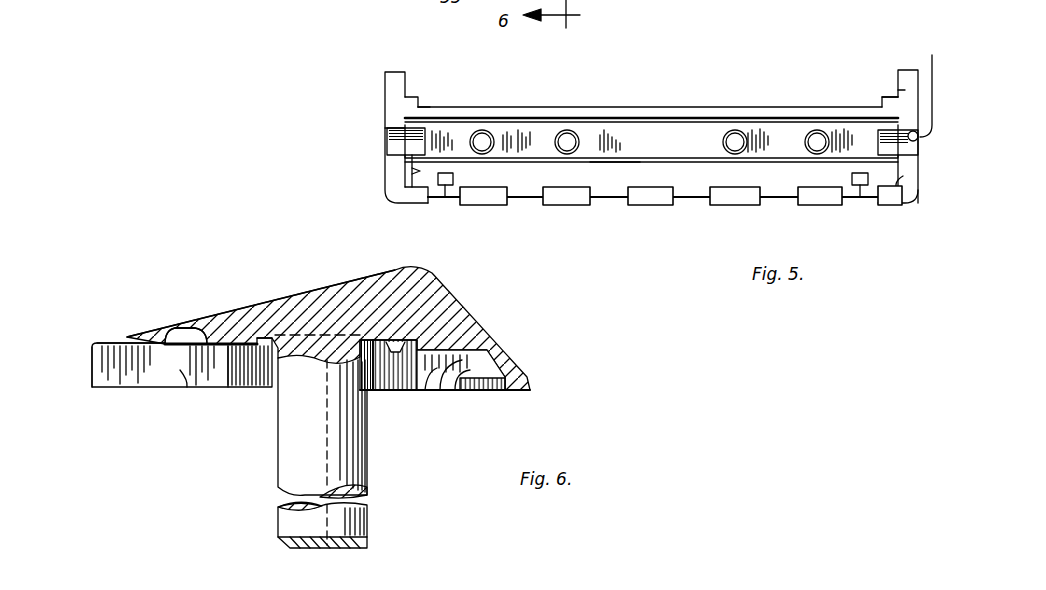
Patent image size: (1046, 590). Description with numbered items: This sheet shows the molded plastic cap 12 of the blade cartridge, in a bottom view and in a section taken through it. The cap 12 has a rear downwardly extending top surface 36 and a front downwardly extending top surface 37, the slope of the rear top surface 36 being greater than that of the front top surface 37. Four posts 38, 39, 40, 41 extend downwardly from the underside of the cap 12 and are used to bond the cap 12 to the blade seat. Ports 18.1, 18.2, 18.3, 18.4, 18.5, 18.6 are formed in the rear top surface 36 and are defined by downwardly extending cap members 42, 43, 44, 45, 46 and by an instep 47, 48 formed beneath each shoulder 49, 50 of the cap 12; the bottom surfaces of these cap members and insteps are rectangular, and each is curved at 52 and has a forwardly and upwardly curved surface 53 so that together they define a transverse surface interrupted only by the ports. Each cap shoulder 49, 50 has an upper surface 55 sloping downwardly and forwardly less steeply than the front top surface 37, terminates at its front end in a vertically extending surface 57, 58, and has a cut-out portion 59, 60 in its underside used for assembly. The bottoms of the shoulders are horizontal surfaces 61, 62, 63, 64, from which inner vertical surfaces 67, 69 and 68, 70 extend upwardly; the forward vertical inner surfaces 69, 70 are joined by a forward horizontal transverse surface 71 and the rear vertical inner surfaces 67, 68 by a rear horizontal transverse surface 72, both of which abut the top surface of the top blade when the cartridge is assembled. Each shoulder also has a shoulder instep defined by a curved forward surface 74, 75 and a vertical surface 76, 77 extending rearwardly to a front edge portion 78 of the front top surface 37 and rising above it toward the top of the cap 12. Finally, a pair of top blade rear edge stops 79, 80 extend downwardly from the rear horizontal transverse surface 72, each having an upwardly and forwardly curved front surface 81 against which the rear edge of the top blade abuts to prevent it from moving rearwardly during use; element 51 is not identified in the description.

In FIG. 5, the cap 12 is at (755, 97).
In FIG. 6, the cap 12 is at (279, 287).
In FIG. 5, the port 18.1 is at (452, 205).
In FIG. 5, the port 18.2 is at (527, 201).
In FIG. 5, the port 18.3 is at (612, 201).
In FIG. 5, the port 18.4 is at (696, 201).
In FIG. 5, the port 18.5 is at (777, 202).
In FIG. 5, the port 18.6 is at (871, 202).
In FIG. 6, the rear top surface 36 is at (467, 318).
In FIG. 6, the front top surface 37 is at (254, 313).
In FIG. 5, the post 38 is at (483, 138).
In FIG. 5, the post 39 is at (568, 135).
In FIG. 6, the post 39 is at (283, 455).
In FIG. 5, the post 40 is at (734, 133).
In FIG. 5, the post 41 is at (818, 133).
In FIG. 5, the downwardly extending cap member 42 is at (502, 203).
In FIG. 5, the downwardly extending cap member 43 is at (567, 203).
In FIG. 6, the downwardly extending cap member 43 is at (490, 367).
In FIG. 5, the downwardly extending cap member 44 is at (657, 204).
In FIG. 5, the downwardly extending cap member 45 is at (735, 203).
In FIG. 5, the downwardly extending cap member 46 is at (818, 203).
In FIG. 5, the instep 47 is at (416, 203).
In FIG. 5, the instep 48 is at (905, 203).
In FIG. 5, the cap shoulder 49 is at (404, 165).
In FIG. 5, the cap shoulder 50 is at (920, 182).
In FIG. 6, the rim 51 is at (522, 392).
In FIG. 6, the curve 52 is at (452, 390).
In FIG. 6, the forwardly and upwardly curved surface 53 is at (437, 390).
In FIG. 6, the upper surface 55 is at (190, 327).
In FIG. 5, the vertically extending surface 57 is at (390, 72).
In FIG. 6, the vertically extending surface 57 is at (92, 372).
In FIG. 5, the vertically extending surface 58 is at (903, 72).
In FIG. 5, the cut-out portion 59 is at (392, 132).
In FIG. 5, the cut-out portion 60 is at (926, 85).
In FIG. 5, the horizontal surface 61 is at (384, 88).
In FIG. 6, the horizontal surface 61 is at (160, 392).
In FIG. 5, the horizontal surface 62 is at (394, 185).
In FIG. 6, the horizontal surface 62 is at (403, 390).
In FIG. 5, the horizontal surface 63 is at (907, 87).
In FIG. 5, the horizontal surface 64 is at (907, 168).
In FIG. 5, the rear vertical inner surface 67 is at (414, 172).
In FIG. 6, the rear vertical inner surface 67 is at (380, 390).
In FIG. 5, the rear vertical inner surface 68 is at (921, 206).
In FIG. 5, the forward vertical inner surface 69 is at (413, 107).
In FIG. 6, the forward vertical inner surface 69 is at (186, 373).
In FIG. 5, the forward vertical inner surface 70 is at (883, 97).
In FIG. 5, the forward horizontal transverse surface 71 is at (638, 118).
In FIG. 6, the forward horizontal transverse surface 71 is at (228, 390).
In FIG. 5, the rear horizontal transverse surface 72 is at (614, 170).
In FIG. 6, the rear horizontal transverse surface 72 is at (392, 343).
In FIG. 5, the curved forward surface 74 is at (416, 97).
In FIG. 6, the curved forward surface 74 is at (137, 337).
In FIG. 5, the curved forward surface 75 is at (887, 92).
In FIG. 5, the vertical surface 76 is at (428, 103).
In FIG. 6, the vertical surface 76 is at (170, 330).
In FIG. 5, the vertical surface 77 is at (880, 101).
In FIG. 5, the front edge portion 78 is at (613, 106).
In FIG. 6, the front edge portion 78 is at (203, 330).
In FIG. 5, the top blade rear edge stop 79 is at (446, 200).
In FIG. 6, the top blade rear edge stop 79 is at (427, 390).
In FIG. 5, the top blade rear edge stop 80 is at (859, 198).
In FIG. 6, the upwardly and forwardly curved front surface 81 is at (396, 343).